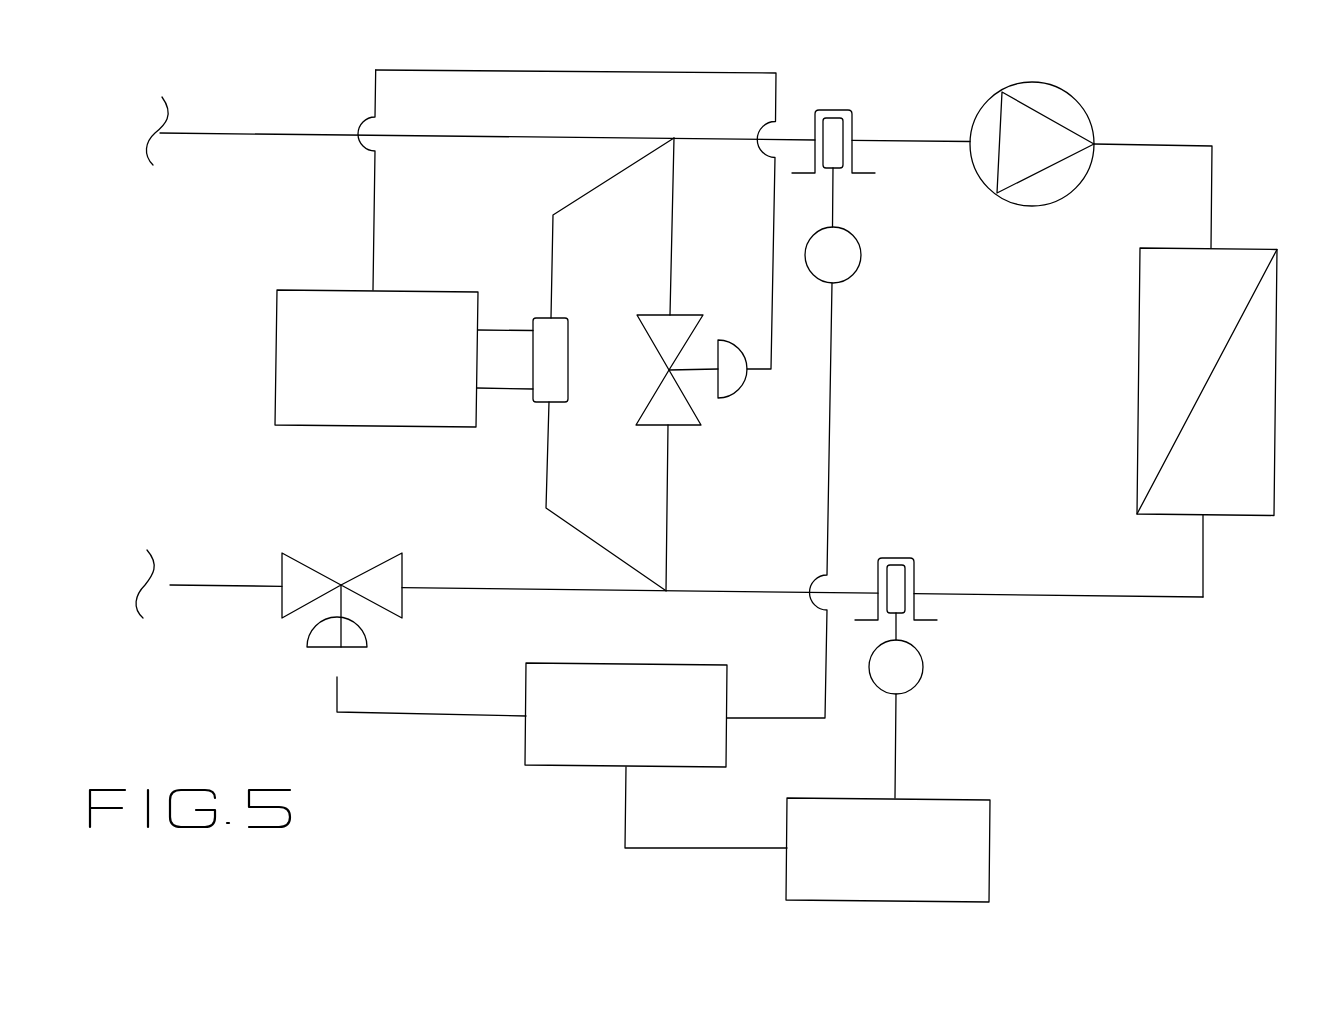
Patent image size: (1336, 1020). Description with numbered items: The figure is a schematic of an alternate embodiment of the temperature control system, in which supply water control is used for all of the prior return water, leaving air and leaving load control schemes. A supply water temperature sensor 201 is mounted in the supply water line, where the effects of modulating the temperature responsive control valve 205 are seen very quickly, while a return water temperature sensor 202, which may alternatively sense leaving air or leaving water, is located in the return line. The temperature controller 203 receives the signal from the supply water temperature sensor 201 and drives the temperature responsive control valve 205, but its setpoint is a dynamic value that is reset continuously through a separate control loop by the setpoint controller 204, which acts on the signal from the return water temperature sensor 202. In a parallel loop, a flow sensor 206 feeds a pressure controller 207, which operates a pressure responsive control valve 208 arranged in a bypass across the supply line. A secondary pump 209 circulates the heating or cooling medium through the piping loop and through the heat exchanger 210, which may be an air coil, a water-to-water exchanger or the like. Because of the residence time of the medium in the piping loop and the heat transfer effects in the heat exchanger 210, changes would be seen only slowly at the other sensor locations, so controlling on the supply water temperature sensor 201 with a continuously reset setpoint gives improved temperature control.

The supply water temperature sensor 201 is at (852, 128).
The return water temperature sensor 202 is at (903, 614).
The temperature controller 203 is at (720, 673).
The setpoint controller 204 is at (990, 850).
The temperature responsive control valve 205 is at (305, 606).
The flow sensor 206 is at (540, 327).
The pressure controller 207 is at (286, 372).
The pressure responsive control valve 208 is at (645, 403).
The secondary pump 209 is at (1086, 112).
The heat exchanger 210 is at (1274, 376).